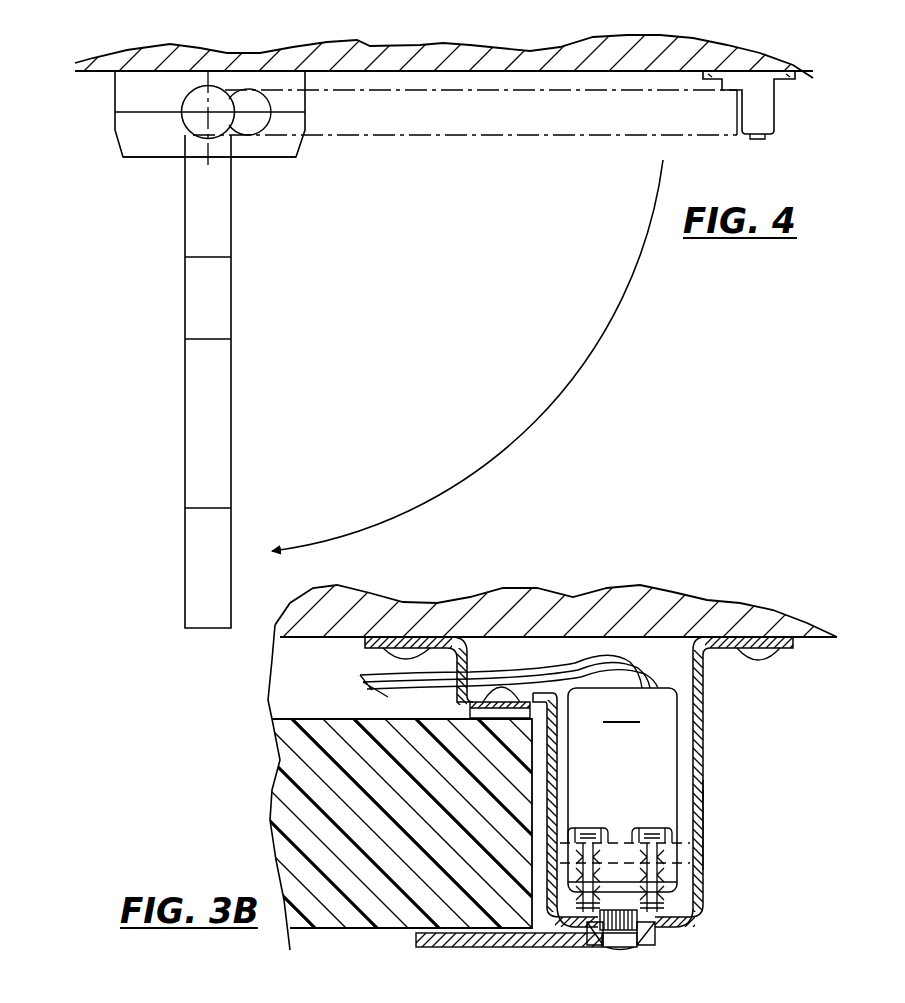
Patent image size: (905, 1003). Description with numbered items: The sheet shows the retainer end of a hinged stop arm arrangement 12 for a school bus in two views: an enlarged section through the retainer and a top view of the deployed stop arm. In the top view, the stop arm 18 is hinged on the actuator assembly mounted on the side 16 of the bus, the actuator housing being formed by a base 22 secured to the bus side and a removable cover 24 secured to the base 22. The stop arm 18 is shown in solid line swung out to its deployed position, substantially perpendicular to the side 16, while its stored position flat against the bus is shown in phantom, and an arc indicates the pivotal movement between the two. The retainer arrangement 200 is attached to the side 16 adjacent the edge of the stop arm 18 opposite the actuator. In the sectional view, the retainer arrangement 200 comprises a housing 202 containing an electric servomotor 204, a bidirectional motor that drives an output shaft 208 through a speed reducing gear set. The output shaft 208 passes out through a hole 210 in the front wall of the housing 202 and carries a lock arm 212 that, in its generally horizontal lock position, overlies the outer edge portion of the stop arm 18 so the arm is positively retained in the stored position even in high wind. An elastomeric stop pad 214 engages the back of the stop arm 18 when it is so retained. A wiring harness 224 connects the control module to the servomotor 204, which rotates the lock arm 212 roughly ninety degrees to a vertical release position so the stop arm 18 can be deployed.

In FIG. 3B, the hinged stop arm arrangement 12 is at (736, 790).
In FIG. 4, the side of the school bus 16 is at (757, 57).
In FIG. 3B, the side of the school bus 16 is at (738, 606).
In FIG. 4, the stop arm 18 is at (193, 553).
In FIG. 3B, the stop arm 18 is at (378, 912).
In FIG. 4, the base 22 is at (135, 98).
In FIG. 4, the removable cover 24 is at (135, 135).
In FIG. 4, the retainer arrangement 200 is at (780, 108).
In FIG. 3B, the retainer arrangement 200 is at (708, 750).
In FIG. 3B, the housing 202 is at (706, 826).
In FIG. 3B, the electric servomotor 204 is at (625, 800).
In FIG. 3B, the output shaft 208 is at (632, 936).
In FIG. 3B, the hole 210 is at (655, 925).
In FIG. 3B, the lock arm 212 is at (530, 942).
In FIG. 3B, the elastomeric stop pad 214 is at (478, 715).
In FIG. 3B, the wiring harness 224 is at (402, 658).